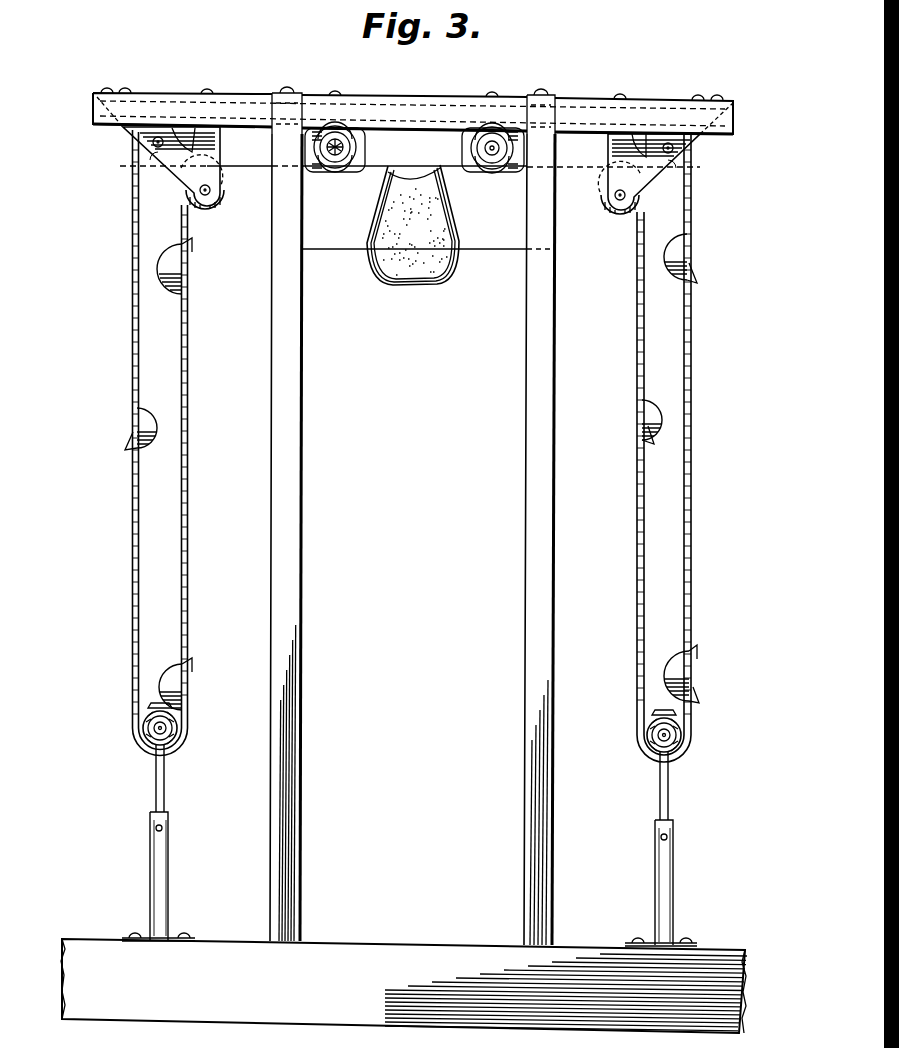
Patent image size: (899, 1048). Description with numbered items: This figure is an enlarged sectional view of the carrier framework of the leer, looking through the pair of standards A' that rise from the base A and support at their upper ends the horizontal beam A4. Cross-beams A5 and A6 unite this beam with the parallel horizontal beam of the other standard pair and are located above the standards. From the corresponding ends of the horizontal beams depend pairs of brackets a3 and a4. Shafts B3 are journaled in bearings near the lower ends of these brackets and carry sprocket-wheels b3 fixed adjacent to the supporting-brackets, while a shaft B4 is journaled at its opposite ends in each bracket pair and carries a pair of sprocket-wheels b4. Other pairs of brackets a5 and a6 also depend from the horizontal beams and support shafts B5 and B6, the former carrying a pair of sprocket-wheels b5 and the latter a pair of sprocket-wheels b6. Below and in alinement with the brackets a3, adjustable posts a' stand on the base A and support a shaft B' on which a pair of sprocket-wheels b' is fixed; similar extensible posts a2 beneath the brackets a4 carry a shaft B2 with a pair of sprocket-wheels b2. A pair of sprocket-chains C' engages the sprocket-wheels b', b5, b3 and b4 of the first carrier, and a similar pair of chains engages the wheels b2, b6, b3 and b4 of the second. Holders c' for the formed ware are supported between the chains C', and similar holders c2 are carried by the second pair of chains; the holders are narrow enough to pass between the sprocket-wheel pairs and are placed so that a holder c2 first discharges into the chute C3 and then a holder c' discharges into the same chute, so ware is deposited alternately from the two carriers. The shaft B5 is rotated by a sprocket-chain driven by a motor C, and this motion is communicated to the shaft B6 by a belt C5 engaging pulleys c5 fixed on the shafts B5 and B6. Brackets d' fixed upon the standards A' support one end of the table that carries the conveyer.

The base A is at (404, 986).
The standards A' is at (426, 539).
The horizontal beam A4 is at (408, 84).
The cross-beam A5 is at (546, 94).
The cross-beam A6 is at (275, 92).
The shaft B' is at (184, 724).
The shaft B2 is at (644, 742).
The shaft B3 is at (222, 204).
The shaft B4 is at (153, 143).
The shaft B5 is at (340, 172).
The shaft B6 is at (488, 170).
The adjustable posts a' is at (162, 842).
The extensible posts a2 is at (658, 794).
The brackets a3 is at (180, 168).
The brackets a4 is at (650, 173).
The brackets a5 is at (366, 150).
The brackets a6 is at (486, 148).
The sprocket-wheels b' is at (121, 725).
The sprocket-wheels b2 is at (648, 722).
The sprocket-wheels b3 is at (211, 192).
The sprocket-wheels b4 is at (150, 160).
The sprocket-wheels b5 is at (306, 158).
The sprocket-wheels b6 is at (522, 160).
The motor C is at (634, 448).
The sprocket-chains C' is at (185, 443).
The chute C3 is at (429, 287).
The belt C5 is at (414, 181).
The holders c' is at (176, 474).
The holders c2 is at (697, 280).
The pulleys c5 is at (562, 148).
The brackets d' is at (414, 593).